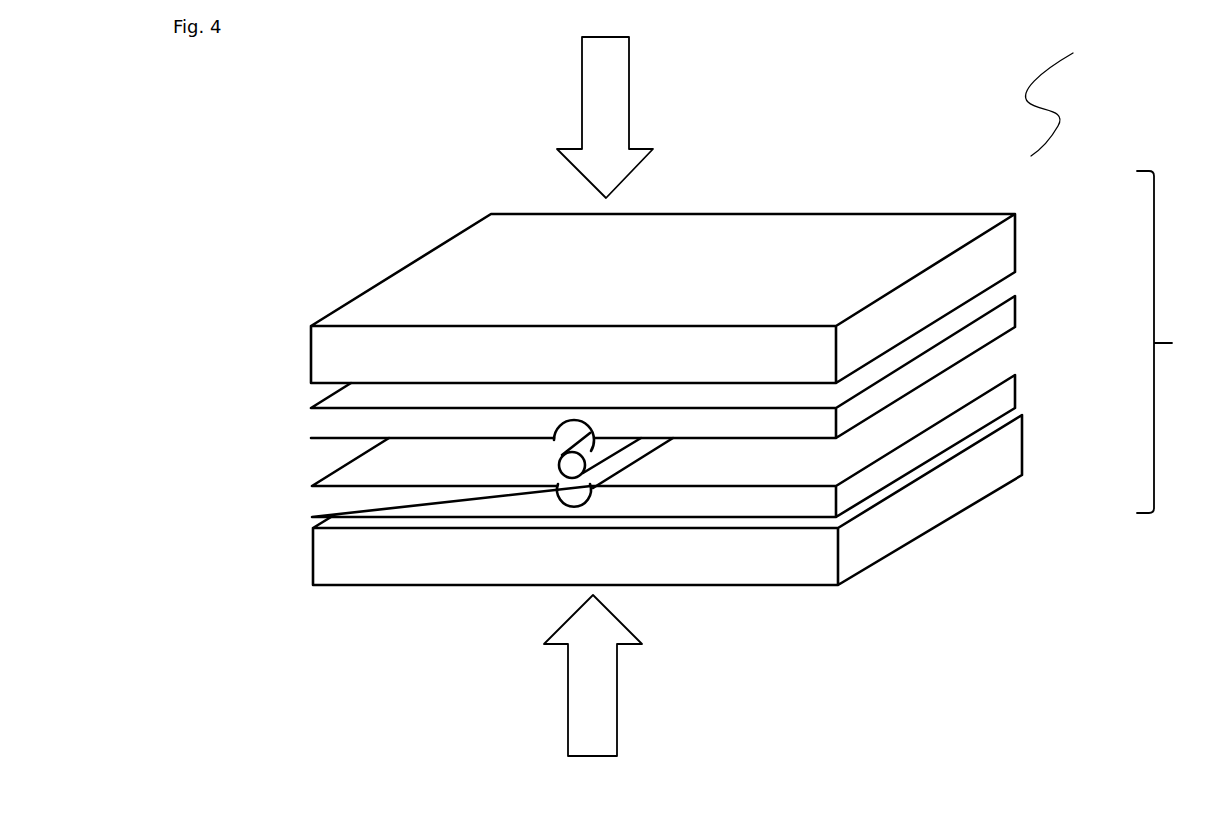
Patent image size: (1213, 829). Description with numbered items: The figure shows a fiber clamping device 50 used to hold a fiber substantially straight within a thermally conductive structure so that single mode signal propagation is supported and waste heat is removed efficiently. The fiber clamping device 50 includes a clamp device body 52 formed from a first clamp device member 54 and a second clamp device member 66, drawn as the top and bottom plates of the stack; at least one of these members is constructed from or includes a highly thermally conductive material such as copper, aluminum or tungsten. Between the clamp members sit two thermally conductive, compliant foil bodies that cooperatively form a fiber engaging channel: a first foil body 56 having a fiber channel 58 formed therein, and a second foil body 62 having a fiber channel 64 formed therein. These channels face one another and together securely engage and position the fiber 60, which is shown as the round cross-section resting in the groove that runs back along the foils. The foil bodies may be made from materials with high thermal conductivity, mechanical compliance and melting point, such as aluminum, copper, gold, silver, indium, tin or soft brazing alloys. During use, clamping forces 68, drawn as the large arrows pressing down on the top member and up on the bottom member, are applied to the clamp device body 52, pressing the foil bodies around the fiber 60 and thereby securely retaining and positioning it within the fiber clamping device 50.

The fiber clamping device 50 is at (1065, 93).
The clamp device body 52 is at (1171, 342).
The first clamp device member 54 is at (373, 285).
The first foil body 56 is at (310, 413).
The fiber channel 58 is at (592, 433).
The fiber 60 is at (578, 463).
The second foil body 62 is at (313, 505).
The fiber channel 64 is at (590, 495).
The second clamp device member 66 is at (312, 572).
The clamping forces 68 is at (620, 100).